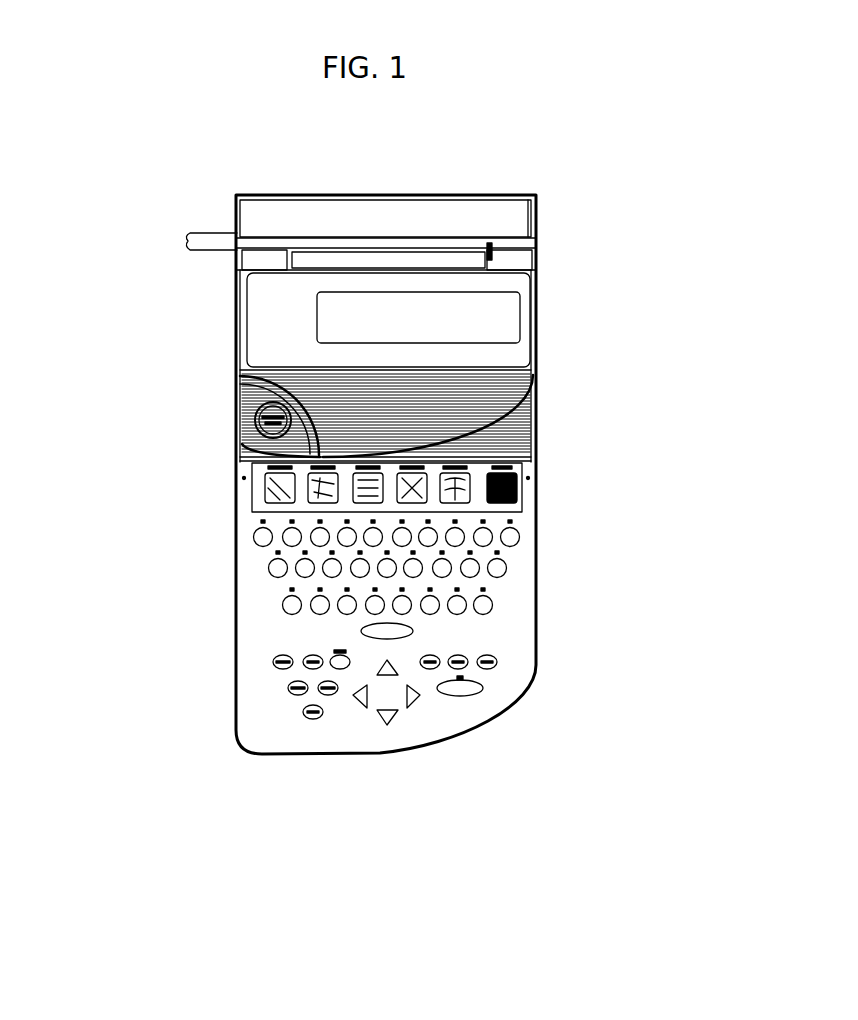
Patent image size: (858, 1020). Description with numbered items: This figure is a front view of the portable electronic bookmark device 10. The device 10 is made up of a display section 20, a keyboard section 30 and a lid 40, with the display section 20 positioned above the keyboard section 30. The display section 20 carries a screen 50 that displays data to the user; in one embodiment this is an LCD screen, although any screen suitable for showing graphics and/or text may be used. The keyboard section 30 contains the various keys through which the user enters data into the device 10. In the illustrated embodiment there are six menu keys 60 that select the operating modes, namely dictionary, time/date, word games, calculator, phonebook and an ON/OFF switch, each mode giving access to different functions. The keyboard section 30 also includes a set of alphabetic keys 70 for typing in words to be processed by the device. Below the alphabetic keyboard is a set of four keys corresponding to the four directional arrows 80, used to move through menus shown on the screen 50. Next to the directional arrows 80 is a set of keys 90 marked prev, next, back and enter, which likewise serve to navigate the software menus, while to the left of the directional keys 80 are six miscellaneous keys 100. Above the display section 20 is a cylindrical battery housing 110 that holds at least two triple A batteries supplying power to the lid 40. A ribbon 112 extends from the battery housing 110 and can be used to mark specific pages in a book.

The portable electronic bookmark device 10 is at (547, 403).
The display section 20 is at (372, 272).
The keyboard section 30 is at (373, 662).
The lid 40 is at (200, 416).
The screen 50 is at (294, 320).
The menu keys 60 is at (301, 501).
The alphabetic keys 70 is at (277, 579).
The directional arrows 80 is at (356, 761).
The keys marked prev, next, back and enter 90 is at (515, 752).
The miscellaneous keys 100 is at (210, 728).
The battery housing 110 is at (458, 165).
The ribbon 112 is at (144, 209).